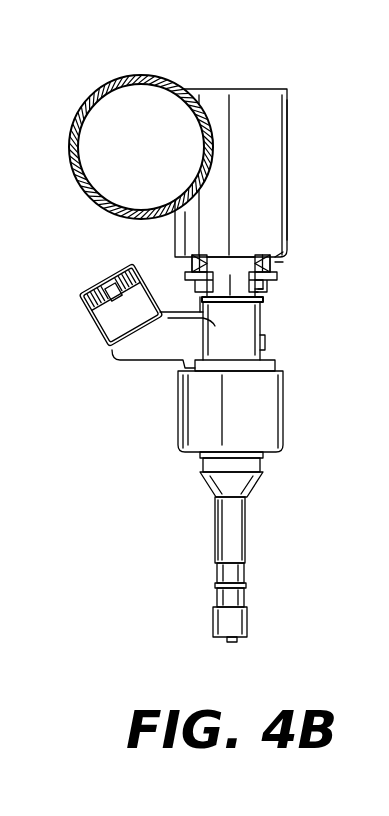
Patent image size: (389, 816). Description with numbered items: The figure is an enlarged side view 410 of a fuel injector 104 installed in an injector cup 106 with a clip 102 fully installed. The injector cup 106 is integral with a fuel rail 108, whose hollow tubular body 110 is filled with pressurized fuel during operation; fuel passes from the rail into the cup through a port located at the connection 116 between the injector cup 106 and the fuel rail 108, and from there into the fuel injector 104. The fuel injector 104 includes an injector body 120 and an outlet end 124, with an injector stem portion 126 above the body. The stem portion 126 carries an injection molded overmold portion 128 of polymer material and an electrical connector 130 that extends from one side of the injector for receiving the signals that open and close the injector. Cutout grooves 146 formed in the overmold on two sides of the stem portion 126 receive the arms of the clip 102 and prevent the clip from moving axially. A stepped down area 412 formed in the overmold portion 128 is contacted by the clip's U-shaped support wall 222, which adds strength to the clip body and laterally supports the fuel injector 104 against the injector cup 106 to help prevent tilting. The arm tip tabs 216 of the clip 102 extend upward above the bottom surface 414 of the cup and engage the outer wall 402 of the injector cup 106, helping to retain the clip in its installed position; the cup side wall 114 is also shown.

The clip 102 is at (172, 268).
The fuel injector 104 is at (178, 505).
The injector cup 106 is at (310, 113).
The fuel rail 108 is at (187, 79).
The hollow tubular body 110 is at (136, 75).
The housing side wall 114 is at (288, 176).
The connection 116 is at (215, 138).
The injector body 120 is at (179, 407).
The outlet end 124 is at (233, 643).
The injector stem portion 126 is at (280, 345).
The overmold portion 128 is at (200, 309).
The electrical connector 130 is at (96, 322).
The cutout grooves 146 is at (264, 283).
The arm tip tab 216 is at (178, 264).
The support wall 222 is at (264, 289).
The outer wall 402 is at (283, 252).
The enlarged side view 410 is at (72, 72).
The stepped down area 412 is at (259, 293).
The bottom surface 414 is at (283, 263).